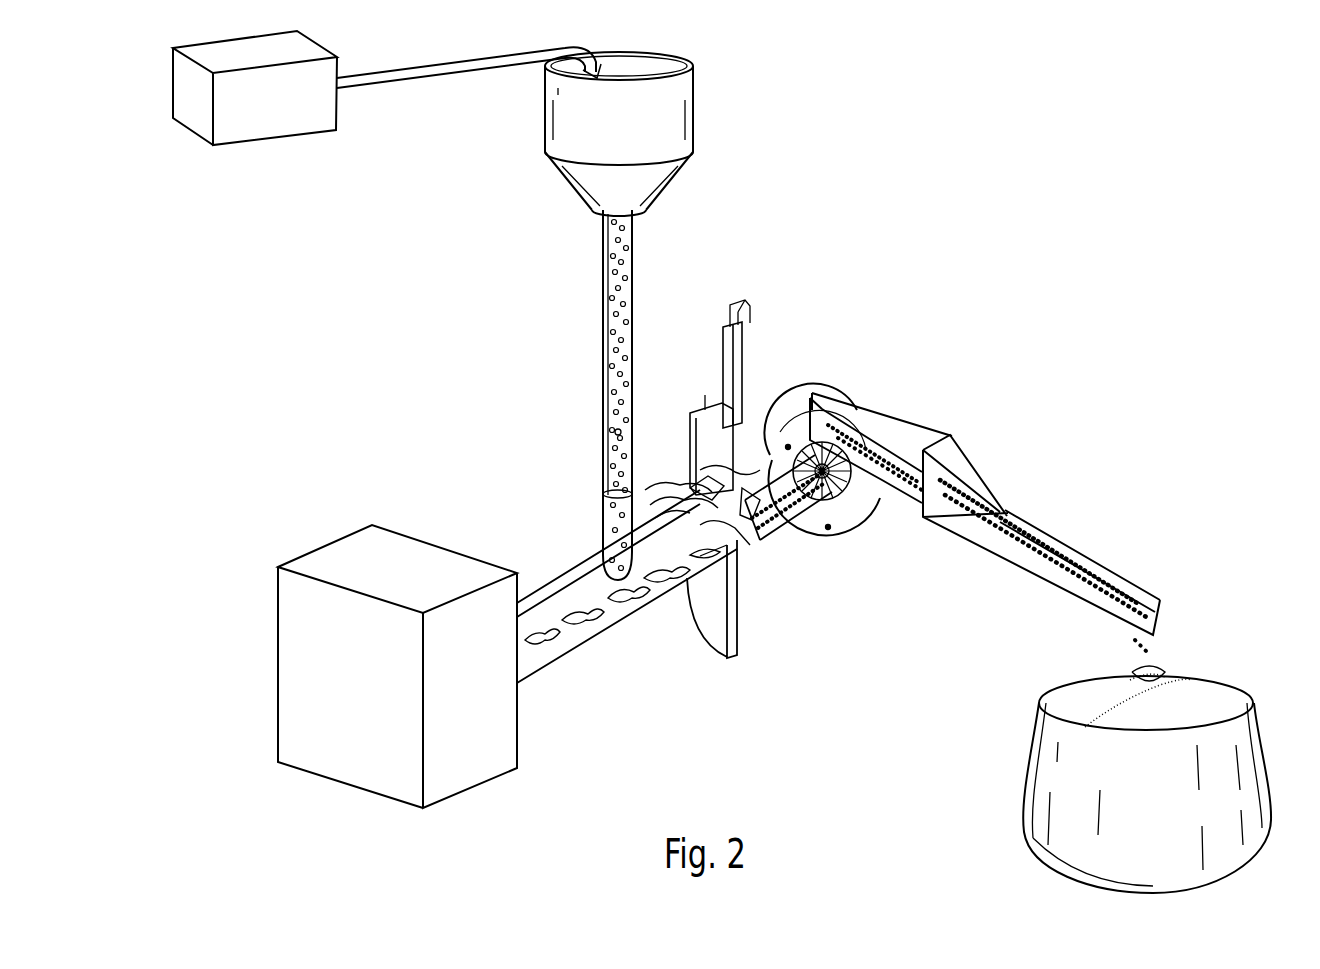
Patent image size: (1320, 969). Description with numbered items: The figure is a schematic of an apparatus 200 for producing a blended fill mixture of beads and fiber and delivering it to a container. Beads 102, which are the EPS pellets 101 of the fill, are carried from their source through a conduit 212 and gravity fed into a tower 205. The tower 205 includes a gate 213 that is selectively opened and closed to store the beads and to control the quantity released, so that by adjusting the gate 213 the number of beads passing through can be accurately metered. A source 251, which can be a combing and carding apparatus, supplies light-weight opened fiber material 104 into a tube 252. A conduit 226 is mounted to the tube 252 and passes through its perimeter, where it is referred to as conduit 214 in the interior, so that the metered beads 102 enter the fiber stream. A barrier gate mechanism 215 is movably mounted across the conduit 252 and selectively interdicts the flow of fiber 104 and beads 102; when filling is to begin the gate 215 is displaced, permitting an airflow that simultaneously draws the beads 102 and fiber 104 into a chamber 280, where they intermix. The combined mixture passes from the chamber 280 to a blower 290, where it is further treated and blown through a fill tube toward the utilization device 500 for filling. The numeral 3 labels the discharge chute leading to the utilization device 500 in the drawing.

The apparatus 200 is at (858, 282).
The conduit 212 is at (446, 76).
The tower 205 is at (693, 102).
The gate 213 is at (588, 182).
The EPS pellets 101 is at (612, 337).
The beads 102 is at (613, 262).
The conduit 226 is at (613, 433).
The barrier gate mechanism 215 is at (690, 430).
The conduit 214 is at (660, 492).
The blower 290 is at (850, 546).
The chamber 280 is at (770, 530).
The discharge chute 3 is at (1007, 513).
The utilization device 500 is at (1020, 793).
The source 251 is at (450, 780).
The tube 252 is at (547, 660).
The opened fiber material 104 is at (603, 615).